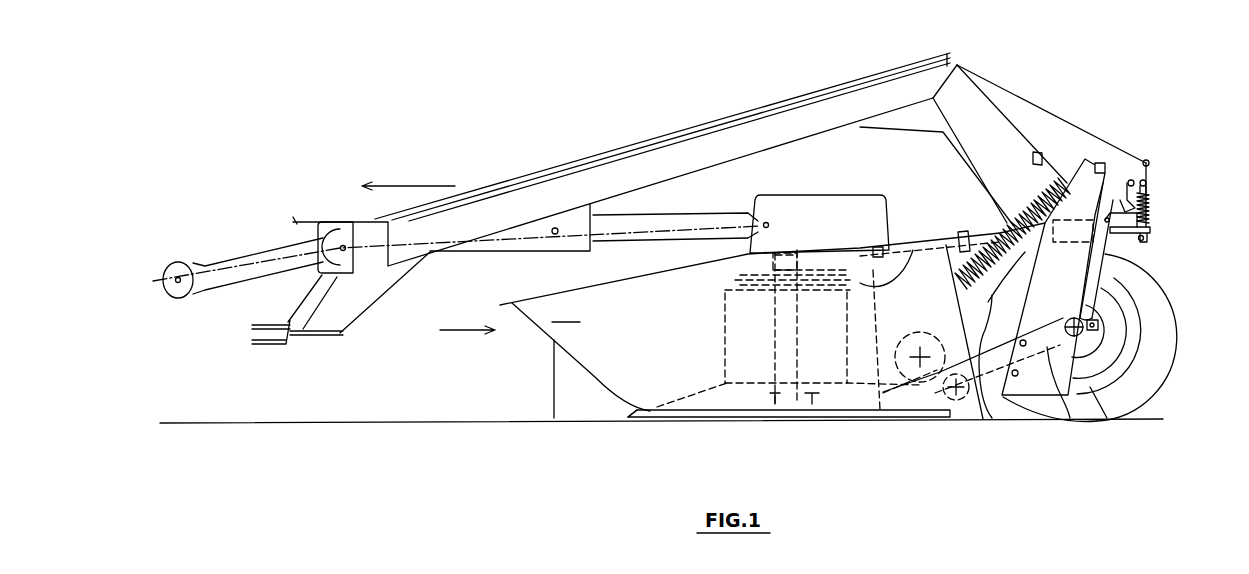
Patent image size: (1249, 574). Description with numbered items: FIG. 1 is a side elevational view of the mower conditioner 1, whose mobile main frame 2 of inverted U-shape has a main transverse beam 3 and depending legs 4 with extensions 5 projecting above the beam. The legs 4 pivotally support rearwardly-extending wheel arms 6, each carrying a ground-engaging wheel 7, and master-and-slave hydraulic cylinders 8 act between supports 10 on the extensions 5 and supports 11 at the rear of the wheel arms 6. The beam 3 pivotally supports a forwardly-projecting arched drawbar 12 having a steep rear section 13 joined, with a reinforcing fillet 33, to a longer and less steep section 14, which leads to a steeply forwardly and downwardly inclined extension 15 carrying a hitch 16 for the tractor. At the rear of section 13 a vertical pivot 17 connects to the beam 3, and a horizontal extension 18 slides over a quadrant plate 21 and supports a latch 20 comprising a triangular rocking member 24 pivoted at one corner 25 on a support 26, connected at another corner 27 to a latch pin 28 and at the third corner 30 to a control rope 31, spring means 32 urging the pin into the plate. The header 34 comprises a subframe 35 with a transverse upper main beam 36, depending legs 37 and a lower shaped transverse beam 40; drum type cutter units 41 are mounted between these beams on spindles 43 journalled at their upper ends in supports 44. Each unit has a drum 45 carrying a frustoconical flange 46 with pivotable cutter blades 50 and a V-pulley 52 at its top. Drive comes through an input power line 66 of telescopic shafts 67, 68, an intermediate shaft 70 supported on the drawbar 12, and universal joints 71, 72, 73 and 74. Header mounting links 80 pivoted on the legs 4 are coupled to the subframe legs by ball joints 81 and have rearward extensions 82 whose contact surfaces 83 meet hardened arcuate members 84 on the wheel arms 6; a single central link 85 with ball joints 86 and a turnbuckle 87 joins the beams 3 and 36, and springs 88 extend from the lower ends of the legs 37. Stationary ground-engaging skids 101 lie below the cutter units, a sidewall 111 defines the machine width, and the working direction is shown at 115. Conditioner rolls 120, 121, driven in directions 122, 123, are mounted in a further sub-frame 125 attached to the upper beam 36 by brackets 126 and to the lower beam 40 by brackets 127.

The mower conditioner 1 is at (1110, 55).
The mobile main frame 2 is at (1109, 203).
The main transverse beam 3 is at (1112, 228).
The depending legs 4 is at (1100, 325).
The extensions 5 is at (1130, 198).
The wheel arms 6 is at (1100, 312).
The ground-engaging wheel 7 is at (1172, 340).
The hydraulic cylinders 8 is at (1112, 246).
The supports 10 is at (1151, 231).
The supports 11 is at (1105, 330).
The arched drawbar 12 is at (982, 88).
The rear section 13 is at (991, 102).
The forwardly and downwardly inclined section 14 is at (714, 163).
The extension 15 is at (383, 292).
The hitch 16 is at (278, 347).
The vertical pivot 17 is at (1043, 158).
The extension 18 is at (1148, 180).
The latch 20 is at (1152, 195).
The quadrant plate 21 is at (1151, 239).
The triangular rocking member 24 is at (1150, 188).
The corner 25 is at (1150, 180).
The support 26 is at (1151, 215).
The corner 27 is at (1150, 200).
The latch pin 28 is at (1151, 225).
The corner 30 is at (1150, 166).
The control rope 31 is at (1035, 101).
The spring means 32 is at (1152, 205).
The reinforcing fillet 33 is at (903, 131).
The header 34 is at (447, 330).
The subframe 35 is at (795, 340).
The transverse upper main beam 36 is at (822, 262).
The depending leg 37 is at (795, 357).
The lower shaped transverse beam 40 is at (823, 410).
The drum type cutter units 41 is at (722, 301).
The spindles 43 is at (780, 272).
The supports 44 is at (793, 252).
The drums 45 is at (722, 318).
The frustoconical flanges 46 is at (670, 400).
The cutter blades 50 is at (642, 418).
The V-pulleys 52 is at (735, 281).
The input power line 66 is at (617, 212).
The telescopic shaft 67 is at (255, 272).
The telescopic shaft 68 is at (600, 232).
The intermediate shaft 70 is at (517, 235).
The universal joint 71 is at (178, 285).
The universal joint 72 is at (343, 275).
The universal joint 73 is at (553, 234).
The universal joint 74 is at (766, 222).
The header mounting links 80 is at (1008, 394).
The ball joints 81 is at (878, 405).
The rearwardly-projecting extensions 82 is at (1107, 418).
The contact surfaces 83 is at (1070, 418).
The hardened arcuate members 84 is at (1145, 358).
The central link 85 is at (968, 240).
The ball joint 86 is at (883, 246).
The turnbuckle 87 is at (947, 232).
The springs 88 is at (996, 272).
The ground-engaging skids 101 is at (745, 418).
The sidewall 111 is at (565, 359).
The working direction 115 is at (404, 187).
The conditioner roll 120 is at (930, 340).
The conditioner roll 121 is at (973, 395).
The direction 122 is at (905, 362).
The direction 123 is at (948, 400).
The further sub-frame 125 is at (992, 418).
The brackets 126 is at (913, 250).
The brackets 127 is at (862, 410).